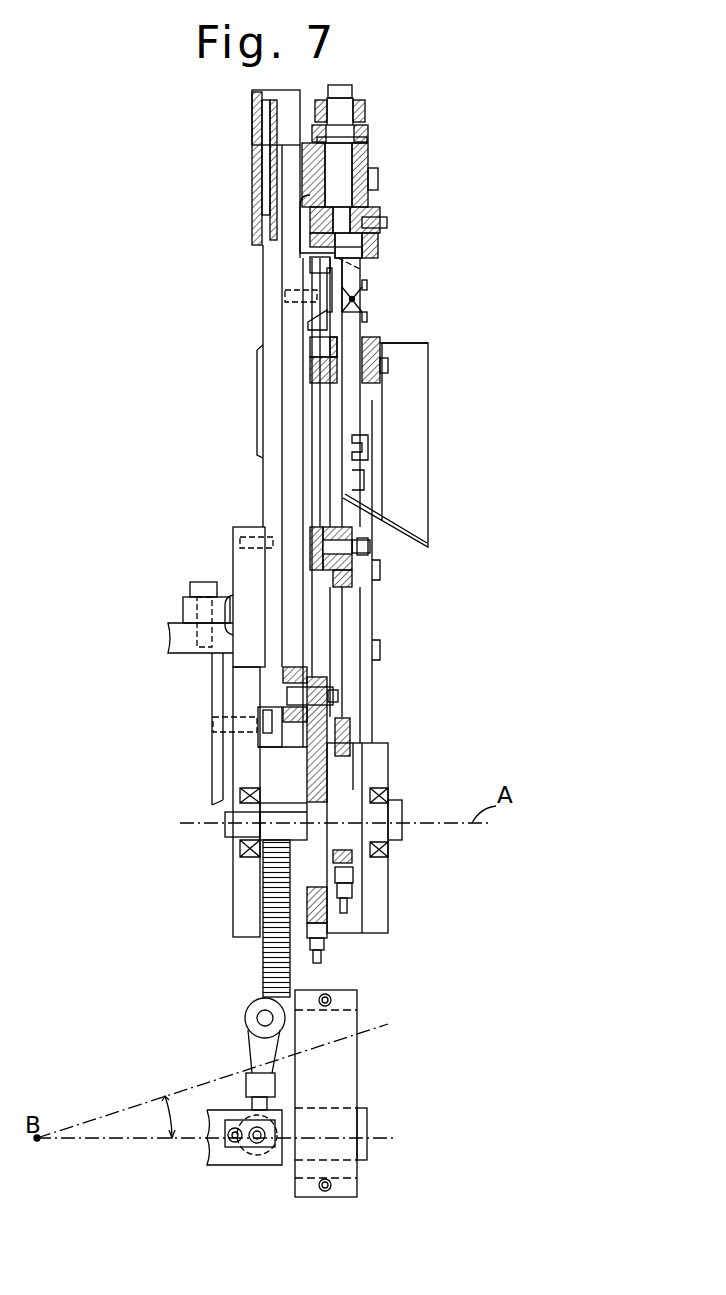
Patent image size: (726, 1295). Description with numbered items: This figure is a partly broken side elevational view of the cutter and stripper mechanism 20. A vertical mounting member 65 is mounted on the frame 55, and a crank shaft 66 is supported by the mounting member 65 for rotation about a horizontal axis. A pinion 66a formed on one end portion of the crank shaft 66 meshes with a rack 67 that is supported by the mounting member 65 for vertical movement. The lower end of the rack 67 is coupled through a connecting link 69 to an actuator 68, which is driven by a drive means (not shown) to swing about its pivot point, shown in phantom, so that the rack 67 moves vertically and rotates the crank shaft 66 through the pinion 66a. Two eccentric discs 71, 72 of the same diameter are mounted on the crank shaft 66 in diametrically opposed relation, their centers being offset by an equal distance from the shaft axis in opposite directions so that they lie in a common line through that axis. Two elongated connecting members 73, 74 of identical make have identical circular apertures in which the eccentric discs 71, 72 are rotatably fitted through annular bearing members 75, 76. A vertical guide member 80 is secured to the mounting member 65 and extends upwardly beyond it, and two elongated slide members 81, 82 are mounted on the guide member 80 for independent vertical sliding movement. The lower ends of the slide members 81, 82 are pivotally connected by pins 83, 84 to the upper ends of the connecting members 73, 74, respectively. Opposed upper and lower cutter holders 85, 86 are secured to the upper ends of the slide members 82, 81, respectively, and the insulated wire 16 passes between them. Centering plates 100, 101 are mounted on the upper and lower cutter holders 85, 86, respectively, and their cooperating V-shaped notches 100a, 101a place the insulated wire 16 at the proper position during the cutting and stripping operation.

The cutter and stripper mechanism 20 is at (382, 142).
The upper cutter holder 85 is at (365, 252).
The centering plate 100 is at (360, 273).
The V-shaped notch 101a is at (362, 288).
The insulated wire 16 is at (362, 308).
The V-shaped notch 100a is at (362, 310).
The centering plate 101 is at (362, 318).
The lower cutter holder 86 is at (397, 352).
The slide member 82 is at (288, 360).
The vertical guide member 80 is at (268, 385).
The slide member 81 is at (320, 470).
The vertical mounting member 65 is at (240, 570).
The pin 83 is at (370, 548).
The frame 55 is at (178, 657).
The pin 84 is at (287, 695).
The connecting member 73 is at (350, 720).
The connecting member 74 is at (347, 735).
The eccentric disc 71 is at (348, 768).
The crank shaft 66 is at (402, 807).
The pinion 66a is at (272, 830).
The annular bearing member 75 is at (355, 870).
The eccentric disc 72 is at (317, 873).
The annular bearing member 76 is at (323, 912).
The rack 67 is at (265, 973).
The connecting link 69 is at (255, 1060).
The actuator 68 is at (215, 1155).